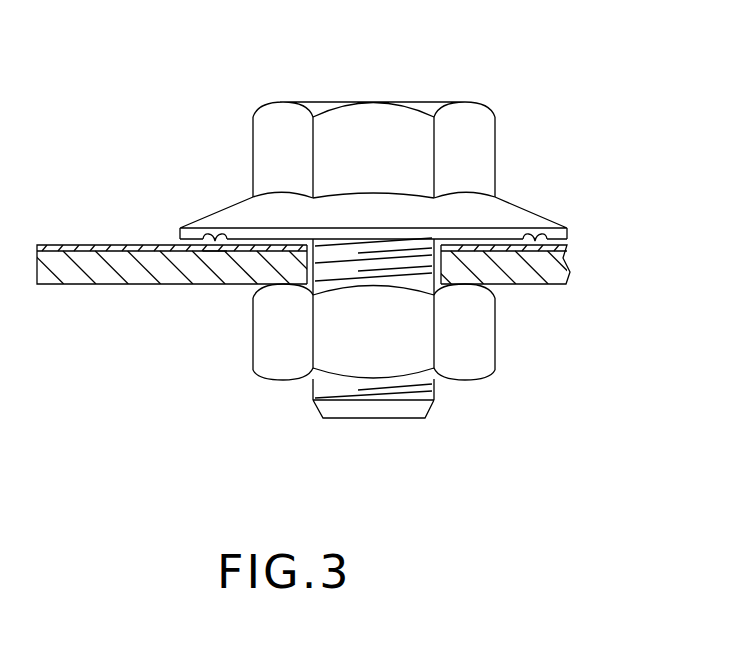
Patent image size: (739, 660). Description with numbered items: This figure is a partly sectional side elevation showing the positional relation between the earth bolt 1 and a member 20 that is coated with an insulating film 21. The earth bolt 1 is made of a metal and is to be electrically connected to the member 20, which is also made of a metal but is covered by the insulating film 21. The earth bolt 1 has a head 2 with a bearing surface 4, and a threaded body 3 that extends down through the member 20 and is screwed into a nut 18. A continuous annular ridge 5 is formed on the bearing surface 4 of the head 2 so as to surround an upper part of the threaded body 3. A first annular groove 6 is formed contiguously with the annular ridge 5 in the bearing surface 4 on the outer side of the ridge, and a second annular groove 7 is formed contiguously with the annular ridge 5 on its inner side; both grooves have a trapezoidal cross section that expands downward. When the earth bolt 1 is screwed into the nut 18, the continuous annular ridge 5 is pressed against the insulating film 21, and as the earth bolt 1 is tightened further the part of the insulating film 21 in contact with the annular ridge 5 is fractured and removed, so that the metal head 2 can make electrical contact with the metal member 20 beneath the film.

The earth bolt 1 is at (556, 99).
The head 2 is at (348, 263).
The threaded body 3 is at (373, 402).
The bearing surface 4 is at (348, 197).
The continuous annular ridge 5 is at (211, 236).
The first annular groove 6 is at (207, 247).
The second annular groove 7 is at (224, 247).
The nut 18 is at (477, 335).
The member 20 is at (73, 281).
The insulating film 21 is at (84, 245).